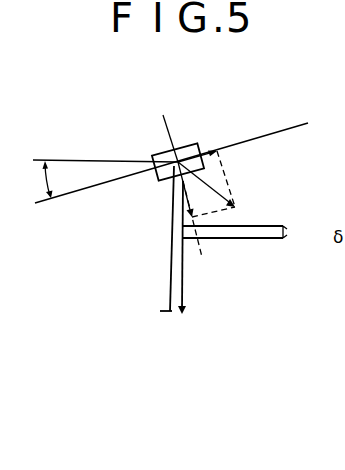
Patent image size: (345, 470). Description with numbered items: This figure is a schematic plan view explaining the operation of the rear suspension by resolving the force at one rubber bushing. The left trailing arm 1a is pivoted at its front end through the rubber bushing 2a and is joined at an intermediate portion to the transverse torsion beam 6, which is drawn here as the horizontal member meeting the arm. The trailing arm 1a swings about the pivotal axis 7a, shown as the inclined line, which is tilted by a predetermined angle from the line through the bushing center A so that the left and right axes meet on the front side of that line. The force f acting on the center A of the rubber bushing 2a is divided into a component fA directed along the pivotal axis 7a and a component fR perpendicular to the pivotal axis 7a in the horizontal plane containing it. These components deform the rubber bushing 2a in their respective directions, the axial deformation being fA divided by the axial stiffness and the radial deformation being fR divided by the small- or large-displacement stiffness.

The left trailing arm 1a is at (183, 287).
The torsion beam 6 is at (263, 240).
The rubber bushing 2a is at (182, 147).
The pivotal axis 7a is at (80, 190).
The center of rubber bushing A is at (165, 152).
The force component in the direction of the pivotal axis fA is at (203, 153).
The force component perpendicular to the pivotal axis fR is at (187, 206).
The force acting on the center f is at (218, 187).